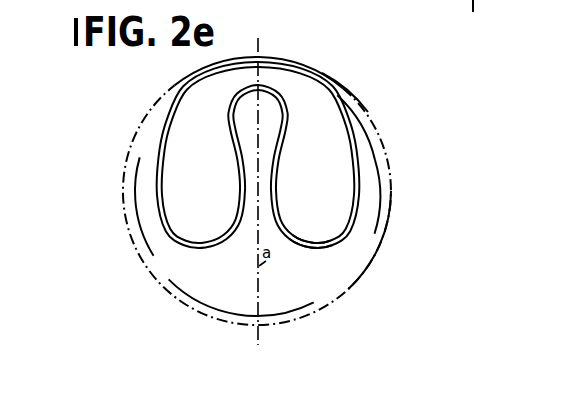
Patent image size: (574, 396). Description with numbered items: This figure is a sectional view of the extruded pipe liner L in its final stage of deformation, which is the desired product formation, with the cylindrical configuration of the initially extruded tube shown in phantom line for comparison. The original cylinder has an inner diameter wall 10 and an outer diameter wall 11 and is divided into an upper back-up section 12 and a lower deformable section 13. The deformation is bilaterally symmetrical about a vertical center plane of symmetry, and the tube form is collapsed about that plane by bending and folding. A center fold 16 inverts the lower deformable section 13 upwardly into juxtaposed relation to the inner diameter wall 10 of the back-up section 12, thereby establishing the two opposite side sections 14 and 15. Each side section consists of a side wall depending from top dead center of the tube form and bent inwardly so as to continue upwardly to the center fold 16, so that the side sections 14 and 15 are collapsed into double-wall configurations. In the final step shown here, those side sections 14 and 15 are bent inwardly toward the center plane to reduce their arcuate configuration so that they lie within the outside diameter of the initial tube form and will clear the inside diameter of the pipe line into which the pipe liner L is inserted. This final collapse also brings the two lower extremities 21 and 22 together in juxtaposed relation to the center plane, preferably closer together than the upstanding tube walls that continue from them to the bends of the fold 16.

The inner diameter wall 10 is at (309, 85).
The outer diameter wall 11 is at (343, 124).
The upper back-up section 12 is at (287, 53).
The lower deformable section 13 is at (302, 316).
The side section 14 is at (157, 164).
The side section 15 is at (358, 172).
The center fold 16 is at (262, 91).
The lower extremity 21 is at (170, 231).
The lower extremity 22 is at (328, 246).
The pipe liner L is at (137, 133).